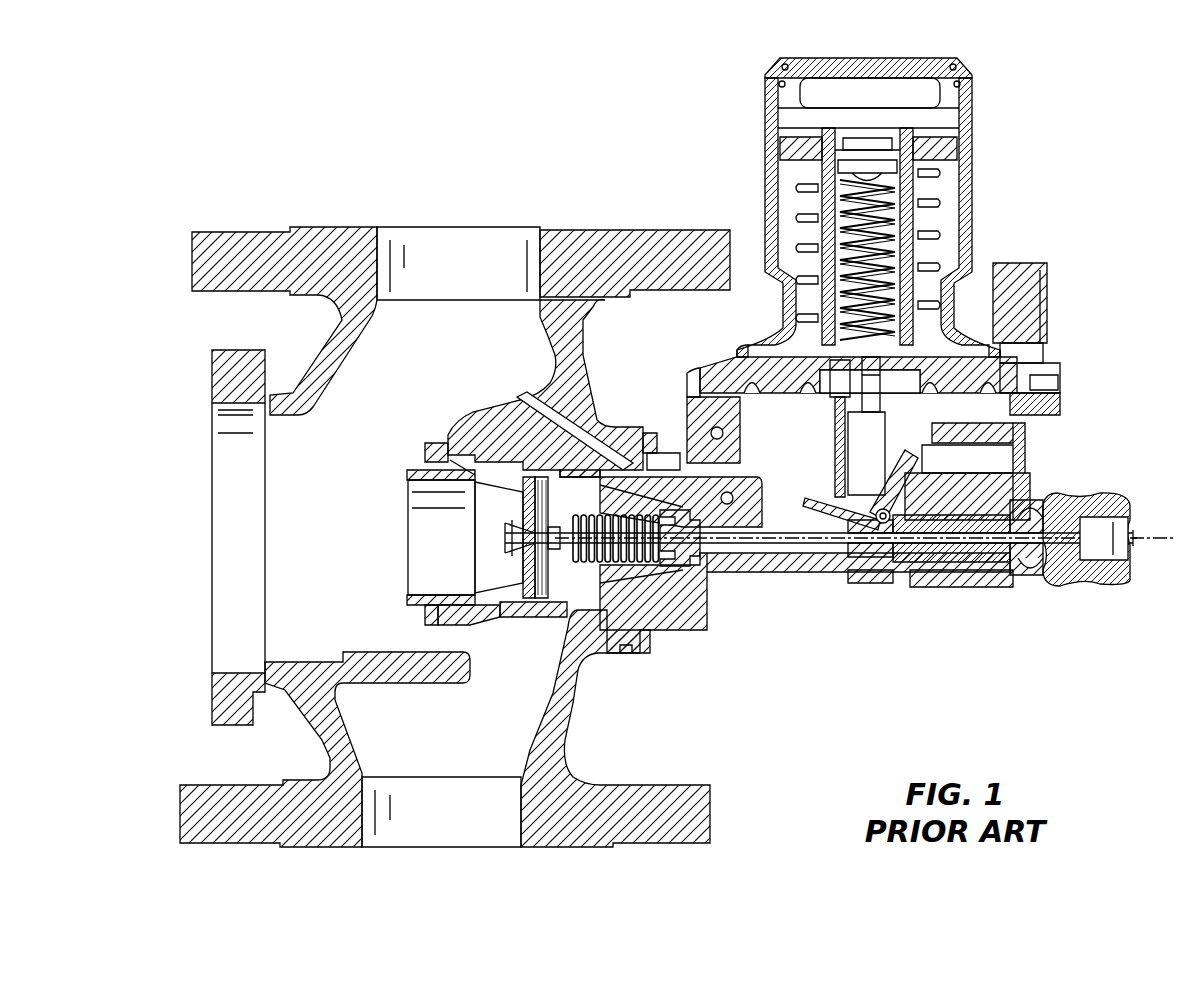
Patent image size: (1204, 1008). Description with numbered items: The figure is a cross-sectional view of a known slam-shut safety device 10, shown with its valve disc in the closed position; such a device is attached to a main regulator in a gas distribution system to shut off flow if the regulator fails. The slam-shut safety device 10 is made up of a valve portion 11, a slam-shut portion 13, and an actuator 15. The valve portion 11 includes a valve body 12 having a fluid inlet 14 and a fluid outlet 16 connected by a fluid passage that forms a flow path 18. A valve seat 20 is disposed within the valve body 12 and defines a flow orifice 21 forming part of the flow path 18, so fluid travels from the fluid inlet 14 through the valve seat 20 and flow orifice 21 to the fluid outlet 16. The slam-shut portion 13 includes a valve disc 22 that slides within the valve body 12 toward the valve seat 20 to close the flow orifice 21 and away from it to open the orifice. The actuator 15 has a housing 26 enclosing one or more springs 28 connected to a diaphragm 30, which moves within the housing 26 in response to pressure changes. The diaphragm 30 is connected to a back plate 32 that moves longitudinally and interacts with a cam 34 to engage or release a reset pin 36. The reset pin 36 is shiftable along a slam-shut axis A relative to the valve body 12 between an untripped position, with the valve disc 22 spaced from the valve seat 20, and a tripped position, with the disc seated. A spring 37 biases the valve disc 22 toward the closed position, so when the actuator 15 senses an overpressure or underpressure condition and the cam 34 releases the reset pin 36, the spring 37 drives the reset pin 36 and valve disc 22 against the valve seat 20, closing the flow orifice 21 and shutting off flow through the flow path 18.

The slam-shut safety device 10 is at (441, 142).
The valve portion 11 is at (711, 727).
The valve body 12 is at (585, 702).
The slam-shut portion 13 is at (801, 632).
The fluid inlet 14 is at (435, 812).
The actuator 15 is at (898, 294).
The fluid outlet 16 is at (418, 240).
The flow path 18 is at (315, 500).
The valve seat 20 is at (500, 470).
The flow orifice 21 is at (505, 540).
The valve disc 22 is at (540, 565).
The housing 26 is at (962, 142).
The springs 28 is at (900, 232).
The diaphragm 30 is at (1000, 395).
The back plate 32 is at (835, 430).
The cam 34 is at (880, 480).
The reset pin 36 is at (917, 555).
The spring 37 is at (640, 515).
The slam-shut axis A is at (1160, 530).